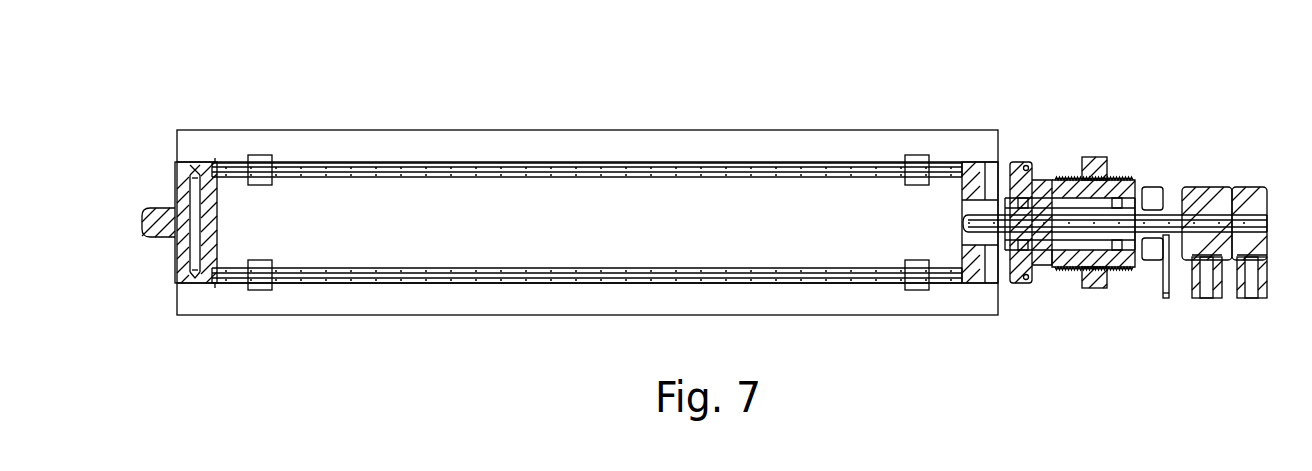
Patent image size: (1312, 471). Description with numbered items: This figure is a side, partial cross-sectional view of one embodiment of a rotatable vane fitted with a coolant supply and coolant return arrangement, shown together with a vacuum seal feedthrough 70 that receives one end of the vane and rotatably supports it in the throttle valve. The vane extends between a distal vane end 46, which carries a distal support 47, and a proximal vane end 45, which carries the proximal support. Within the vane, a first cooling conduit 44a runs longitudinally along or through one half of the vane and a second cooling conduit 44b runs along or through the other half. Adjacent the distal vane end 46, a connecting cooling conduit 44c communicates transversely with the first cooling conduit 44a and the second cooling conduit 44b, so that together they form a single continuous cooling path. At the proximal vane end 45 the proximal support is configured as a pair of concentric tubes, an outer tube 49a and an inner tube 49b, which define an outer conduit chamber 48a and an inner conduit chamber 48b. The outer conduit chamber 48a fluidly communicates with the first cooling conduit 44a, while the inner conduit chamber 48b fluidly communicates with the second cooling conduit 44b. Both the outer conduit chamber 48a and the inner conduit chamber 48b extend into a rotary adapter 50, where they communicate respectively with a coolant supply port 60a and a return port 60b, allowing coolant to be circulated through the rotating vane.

The first cooling conduit 44a is at (430, 170).
The second cooling conduit 44b is at (365, 273).
The connecting cooling conduit 44c is at (197, 197).
The proximal vane end 45 is at (998, 130).
The distal vane end 46 is at (185, 130).
The distal support 47 is at (157, 238).
The outer conduit chamber 48a is at (1115, 205).
The inner conduit chamber 48b is at (1080, 240).
The outer tube 49a is at (1052, 212).
The inner tube 49b is at (998, 228).
The rotary adapter 50 is at (1230, 200).
The coolant supply port 60a is at (1203, 293).
The return port 60b is at (1252, 285).
The vacuum seal feedthrough 70 is at (1020, 163).